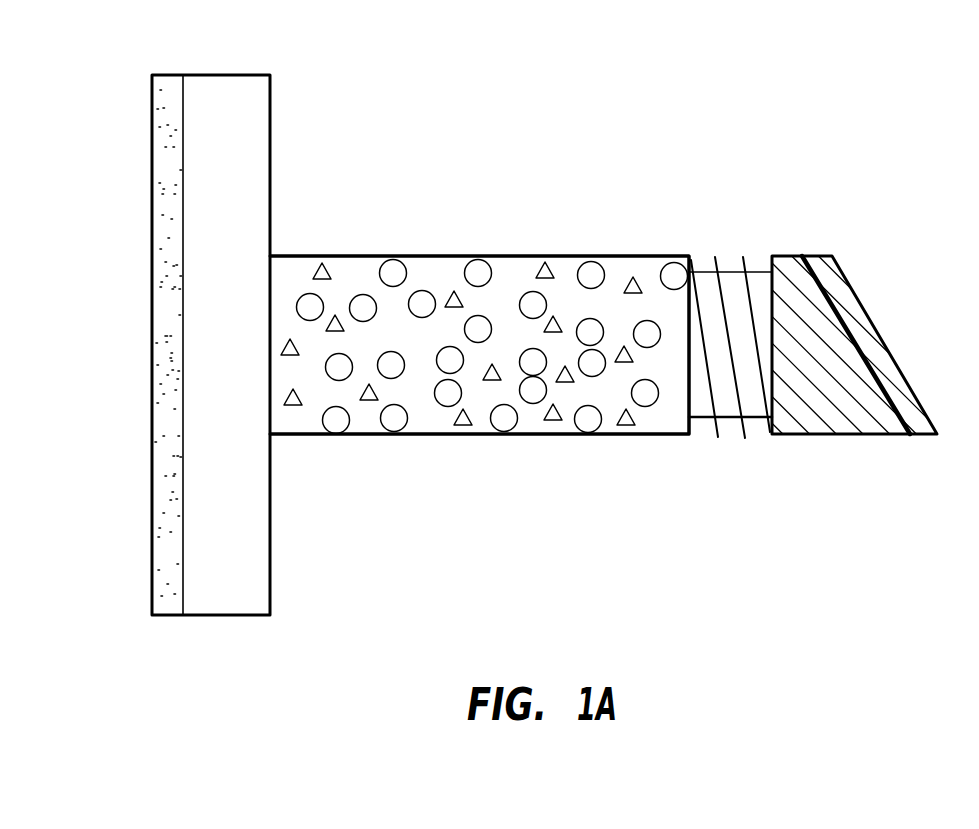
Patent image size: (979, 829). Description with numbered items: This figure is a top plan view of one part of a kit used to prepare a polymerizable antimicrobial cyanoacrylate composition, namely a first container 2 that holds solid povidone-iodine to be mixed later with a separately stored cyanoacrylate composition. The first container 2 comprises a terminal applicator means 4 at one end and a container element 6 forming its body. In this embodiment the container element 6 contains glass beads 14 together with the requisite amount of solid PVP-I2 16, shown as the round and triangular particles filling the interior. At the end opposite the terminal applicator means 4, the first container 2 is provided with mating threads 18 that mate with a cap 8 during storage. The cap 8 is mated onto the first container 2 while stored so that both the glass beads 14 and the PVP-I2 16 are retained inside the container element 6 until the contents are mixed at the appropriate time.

The first container 2 is at (345, 126).
The terminal applicator means 4 is at (168, 630).
The container element 6 is at (494, 246).
The cap 8 is at (875, 330).
The glass beads 14 is at (391, 259).
The solid PVP-I2 16 is at (636, 272).
The mating threads 18 is at (745, 423).